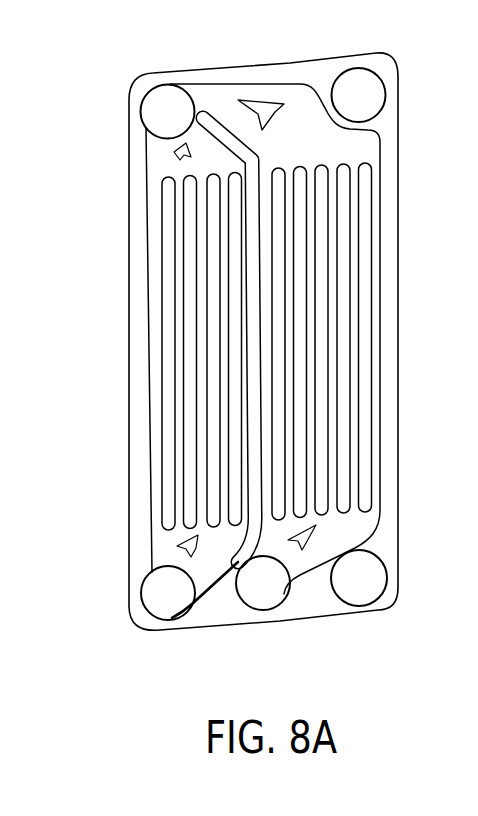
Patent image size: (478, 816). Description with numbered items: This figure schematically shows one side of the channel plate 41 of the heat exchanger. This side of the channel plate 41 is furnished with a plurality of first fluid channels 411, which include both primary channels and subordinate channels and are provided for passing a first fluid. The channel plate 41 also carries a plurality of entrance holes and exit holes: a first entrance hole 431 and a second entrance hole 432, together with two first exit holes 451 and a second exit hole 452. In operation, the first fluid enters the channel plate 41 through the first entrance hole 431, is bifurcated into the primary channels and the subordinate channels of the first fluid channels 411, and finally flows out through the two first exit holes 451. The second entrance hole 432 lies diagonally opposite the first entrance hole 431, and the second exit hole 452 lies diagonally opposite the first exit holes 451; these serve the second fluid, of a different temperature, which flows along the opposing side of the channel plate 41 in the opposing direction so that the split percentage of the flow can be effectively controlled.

The channel plate 41 is at (263, 61).
The first fluid channels 411 is at (210, 590).
The first entrance hole 431 is at (163, 111).
The second entrance hole 432 is at (365, 582).
The first exit holes 451 is at (263, 570).
The second exit hole 452 is at (365, 87).